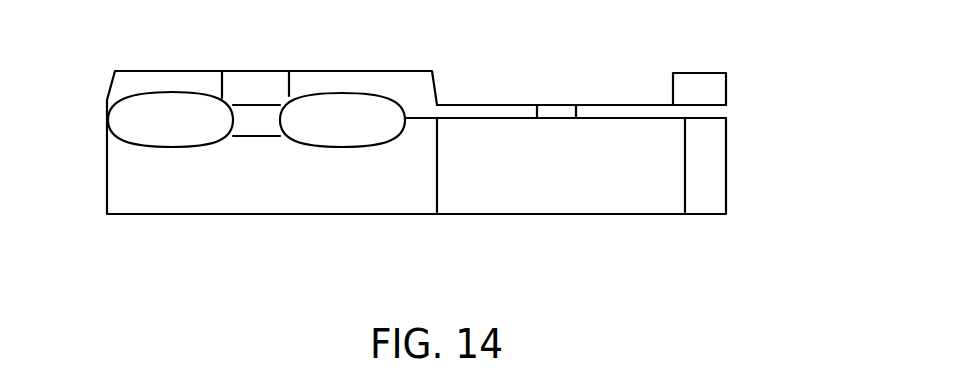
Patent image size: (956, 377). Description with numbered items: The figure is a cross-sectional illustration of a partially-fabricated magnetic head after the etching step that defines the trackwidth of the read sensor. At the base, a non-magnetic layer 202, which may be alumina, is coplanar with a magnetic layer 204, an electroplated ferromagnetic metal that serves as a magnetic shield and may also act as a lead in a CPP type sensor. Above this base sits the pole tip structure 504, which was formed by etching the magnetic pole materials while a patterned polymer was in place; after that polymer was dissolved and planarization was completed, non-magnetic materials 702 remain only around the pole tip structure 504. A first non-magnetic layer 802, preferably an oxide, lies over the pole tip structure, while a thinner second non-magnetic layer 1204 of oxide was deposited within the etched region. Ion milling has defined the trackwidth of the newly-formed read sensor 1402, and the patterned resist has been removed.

The non-magnetic layer 202 is at (272, 215).
The magnetic layer 204 is at (572, 215).
The first non-magnetic layer 802 is at (128, 72).
The non-magnetic materials 702 is at (128, 130).
The pole tip structure 504 is at (247, 117).
The second non-magnetic layer 1204 is at (260, 71).
The read sensor 1402 is at (558, 110).